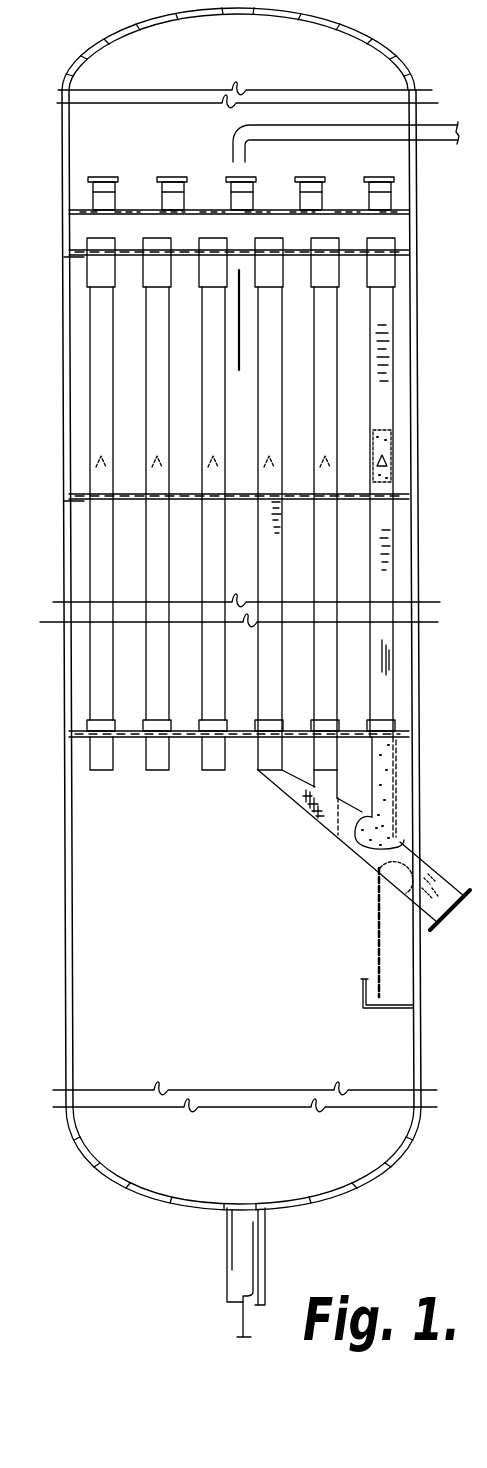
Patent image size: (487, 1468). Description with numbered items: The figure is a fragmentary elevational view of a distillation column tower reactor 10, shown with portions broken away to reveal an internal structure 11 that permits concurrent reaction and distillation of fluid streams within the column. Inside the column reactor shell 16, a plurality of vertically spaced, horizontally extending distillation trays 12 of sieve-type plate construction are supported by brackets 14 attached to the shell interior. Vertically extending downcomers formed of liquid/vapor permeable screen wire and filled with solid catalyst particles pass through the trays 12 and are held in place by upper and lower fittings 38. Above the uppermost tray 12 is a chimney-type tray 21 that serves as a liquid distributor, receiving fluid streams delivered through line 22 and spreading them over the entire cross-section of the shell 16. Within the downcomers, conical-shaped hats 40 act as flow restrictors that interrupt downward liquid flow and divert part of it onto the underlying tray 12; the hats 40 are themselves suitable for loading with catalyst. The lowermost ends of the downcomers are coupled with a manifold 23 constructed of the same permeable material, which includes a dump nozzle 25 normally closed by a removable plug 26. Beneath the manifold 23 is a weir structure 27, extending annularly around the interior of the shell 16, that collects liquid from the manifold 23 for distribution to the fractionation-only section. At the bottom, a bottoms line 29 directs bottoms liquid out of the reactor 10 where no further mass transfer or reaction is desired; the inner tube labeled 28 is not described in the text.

The distillation column tower reactor 10 is at (426, 45).
The structure 11 is at (408, 242).
The distillation trays 12 is at (398, 256).
The brackets 14 is at (400, 502).
The column reactor shell 16 is at (420, 362).
The chimney-type tray 21 is at (119, 166).
The line 22 is at (440, 145).
The manifold 23 is at (322, 818).
The dump nozzle 25 is at (449, 888).
The removable plug 26 is at (425, 858).
The weir structure 27 is at (377, 946).
The inner outlet tube 28 is at (258, 1203).
The bottoms line 29 is at (263, 1238).
The upper and lower fittings 38 is at (341, 249).
The conical-shaped hats 40 is at (392, 457).